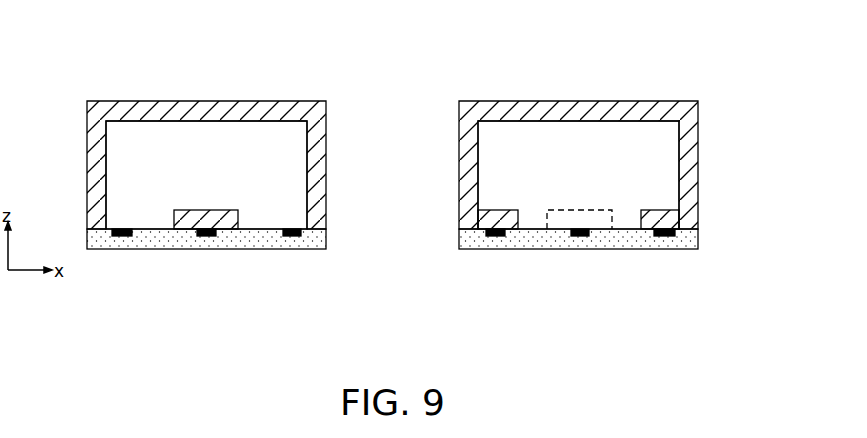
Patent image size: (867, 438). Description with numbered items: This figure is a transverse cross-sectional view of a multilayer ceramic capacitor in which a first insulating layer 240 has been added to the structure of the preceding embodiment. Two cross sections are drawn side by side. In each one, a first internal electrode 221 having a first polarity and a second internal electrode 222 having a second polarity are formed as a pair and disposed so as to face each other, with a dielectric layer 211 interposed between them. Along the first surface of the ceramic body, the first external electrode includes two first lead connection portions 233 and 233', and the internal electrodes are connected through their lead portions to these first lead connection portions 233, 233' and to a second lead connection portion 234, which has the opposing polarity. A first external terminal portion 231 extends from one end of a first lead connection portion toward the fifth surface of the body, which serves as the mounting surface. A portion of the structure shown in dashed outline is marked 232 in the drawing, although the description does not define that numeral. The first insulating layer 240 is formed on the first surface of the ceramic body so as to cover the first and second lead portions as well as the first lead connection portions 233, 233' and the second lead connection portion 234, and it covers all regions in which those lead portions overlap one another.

The dielectric layer 211 is at (263, 108).
The first internal electrode 221 is at (297, 160).
The second internal electrode 222 is at (668, 160).
The first external terminal portion 231 is at (488, 236).
The removed step portion (dashed) 232 is at (585, 229).
The first lead connection portion 233 is at (409, 194).
The first lead connection portion 233' is at (354, 222).
The second lead connection portion 234 is at (210, 229).
The first insulating layer 240 is at (201, 244).